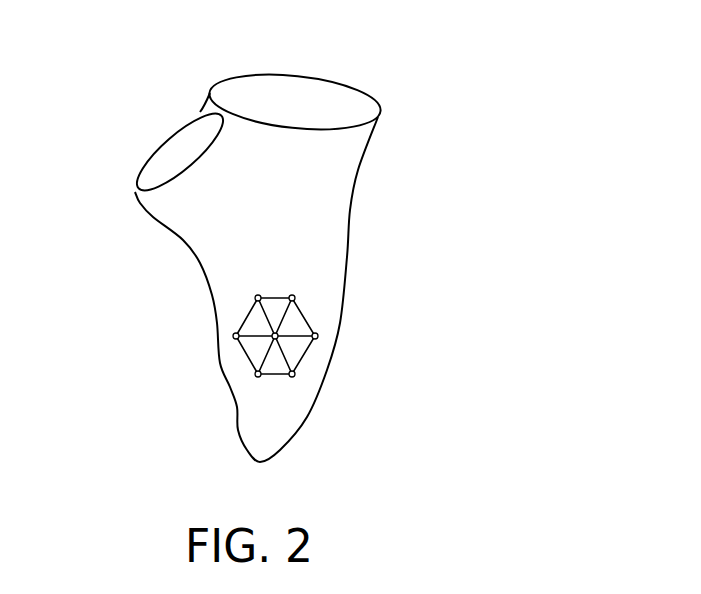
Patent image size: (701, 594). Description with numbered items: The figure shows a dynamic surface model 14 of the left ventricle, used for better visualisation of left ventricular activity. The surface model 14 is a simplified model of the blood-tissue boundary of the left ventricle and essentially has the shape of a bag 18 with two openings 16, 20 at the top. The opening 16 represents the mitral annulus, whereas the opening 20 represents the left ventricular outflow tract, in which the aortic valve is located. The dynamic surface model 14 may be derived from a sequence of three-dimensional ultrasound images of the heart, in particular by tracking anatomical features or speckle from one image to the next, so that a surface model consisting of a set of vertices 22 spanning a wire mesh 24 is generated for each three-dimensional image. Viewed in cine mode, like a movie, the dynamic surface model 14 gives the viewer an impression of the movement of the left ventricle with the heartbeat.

The dynamic surface model 14 is at (467, 267).
The opening 16 is at (363, 90).
The bag 18 is at (250, 277).
The opening 20 is at (172, 163).
The vertices 22 is at (235, 336).
The wire mesh 24 is at (303, 355).